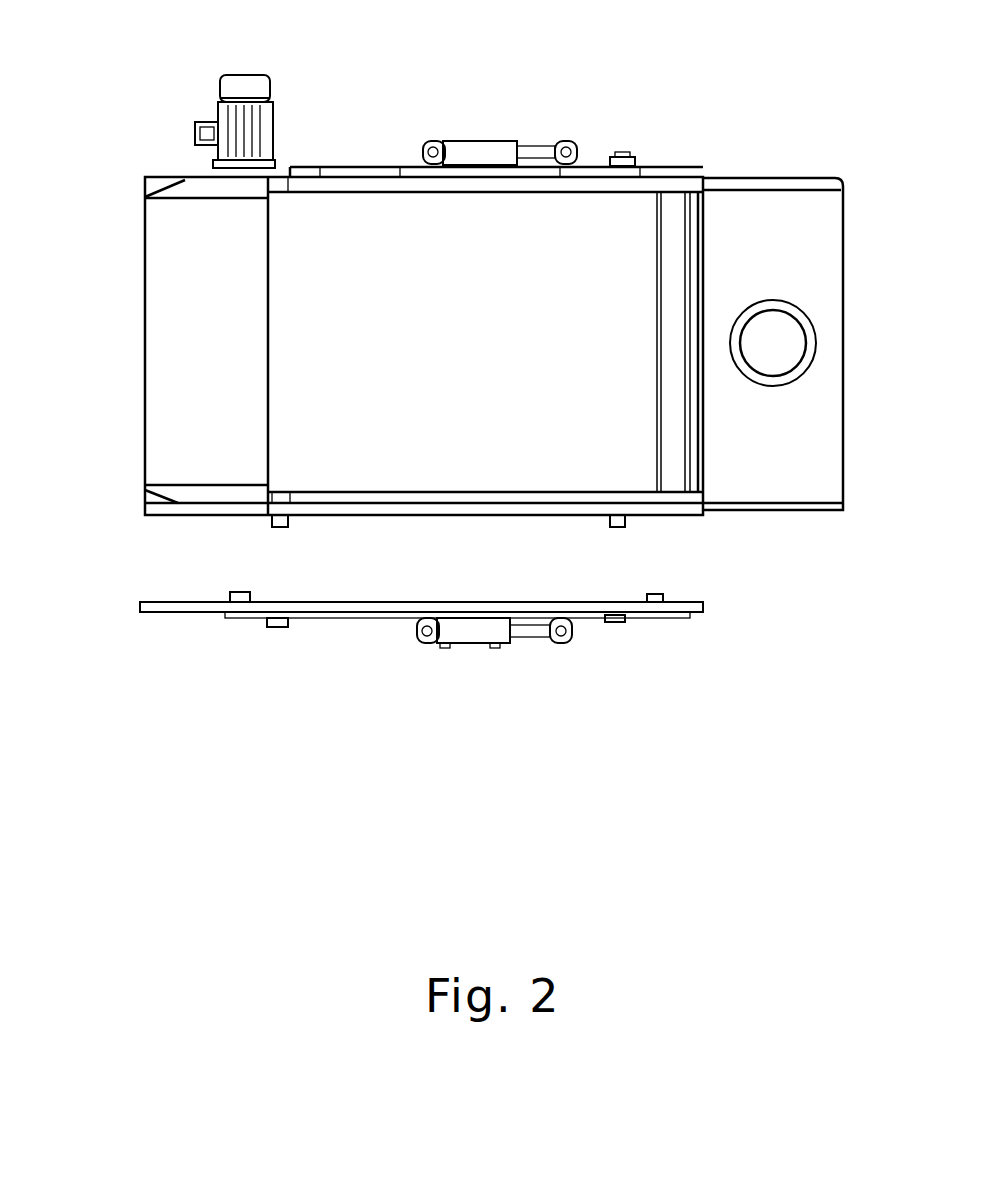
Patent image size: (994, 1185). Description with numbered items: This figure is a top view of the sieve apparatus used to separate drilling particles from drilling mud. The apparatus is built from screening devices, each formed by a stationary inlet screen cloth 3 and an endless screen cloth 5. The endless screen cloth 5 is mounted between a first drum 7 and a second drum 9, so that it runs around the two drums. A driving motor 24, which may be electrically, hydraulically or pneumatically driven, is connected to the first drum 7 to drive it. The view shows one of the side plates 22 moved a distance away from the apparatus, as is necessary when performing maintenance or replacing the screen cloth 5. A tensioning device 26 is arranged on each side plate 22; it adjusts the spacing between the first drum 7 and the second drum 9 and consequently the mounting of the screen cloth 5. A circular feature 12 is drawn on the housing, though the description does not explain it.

The stationary inlet screen cloth 3 is at (203, 340).
The endless screen cloth 5 is at (595, 440).
The first drum 7 is at (272, 527).
The second drum 9 is at (625, 527).
The sight glass 12 is at (797, 303).
The side plate 22 is at (330, 642).
The driving motor 24 is at (275, 127).
The tensioning device 26 is at (487, 140).